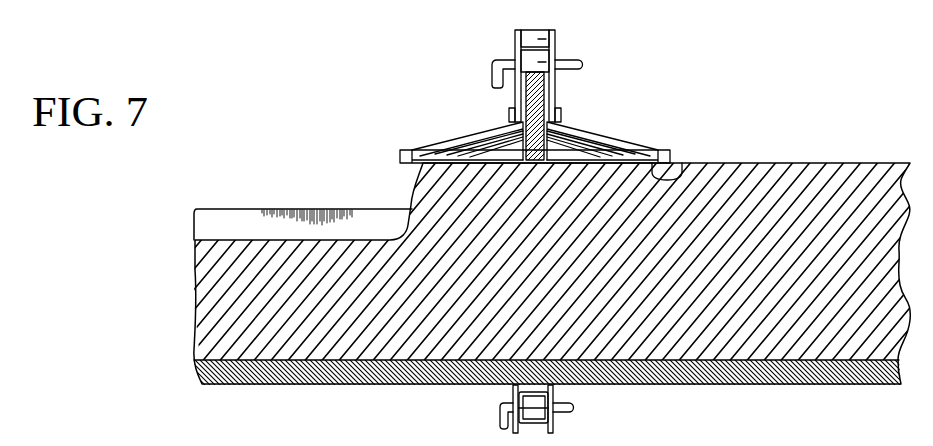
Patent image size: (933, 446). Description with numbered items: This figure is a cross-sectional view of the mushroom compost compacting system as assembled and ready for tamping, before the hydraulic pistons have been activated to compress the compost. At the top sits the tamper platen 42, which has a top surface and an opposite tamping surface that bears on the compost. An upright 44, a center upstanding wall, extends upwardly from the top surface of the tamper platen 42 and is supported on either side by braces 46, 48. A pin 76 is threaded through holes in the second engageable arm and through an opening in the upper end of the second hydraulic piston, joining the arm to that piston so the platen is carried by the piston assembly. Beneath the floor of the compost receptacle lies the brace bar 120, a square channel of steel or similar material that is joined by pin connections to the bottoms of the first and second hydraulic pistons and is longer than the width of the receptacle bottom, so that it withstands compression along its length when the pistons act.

The tamper platen 42 is at (702, 163).
The upright 44 is at (550, 99).
The brace 46 is at (448, 142).
The brace 48 is at (622, 147).
The pin 76 is at (505, 62).
The brace bar 120 is at (533, 425).